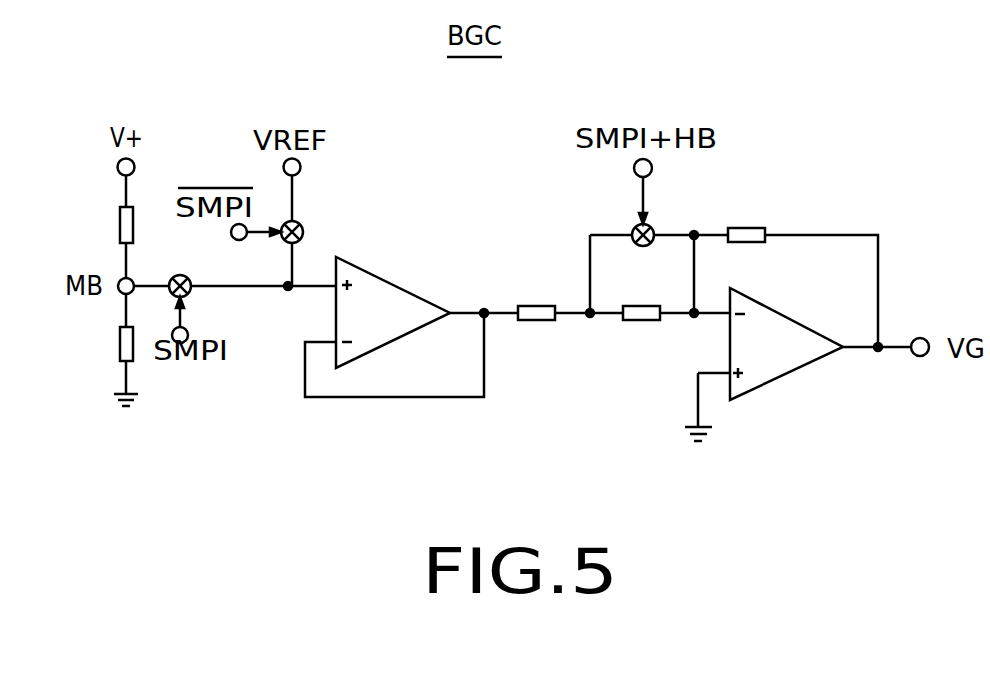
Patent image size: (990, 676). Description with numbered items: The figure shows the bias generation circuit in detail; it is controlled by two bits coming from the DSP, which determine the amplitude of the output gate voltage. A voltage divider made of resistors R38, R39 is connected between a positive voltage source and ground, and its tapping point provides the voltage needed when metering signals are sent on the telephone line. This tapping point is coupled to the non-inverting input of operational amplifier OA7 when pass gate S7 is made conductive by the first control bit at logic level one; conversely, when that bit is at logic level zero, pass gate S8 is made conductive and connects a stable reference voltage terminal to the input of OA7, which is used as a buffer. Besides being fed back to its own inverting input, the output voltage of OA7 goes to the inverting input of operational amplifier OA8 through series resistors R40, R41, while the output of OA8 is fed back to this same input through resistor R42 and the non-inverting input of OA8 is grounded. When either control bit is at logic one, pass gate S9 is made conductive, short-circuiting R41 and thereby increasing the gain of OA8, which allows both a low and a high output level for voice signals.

The resistor R38 is at (91, 225).
The resistor R39 is at (91, 346).
The series resistor R40 is at (537, 297).
The series resistor R41 is at (637, 298).
The feedback resistor R42 is at (744, 219).
The pass gate S7 is at (178, 292).
The pass gate S8 is at (288, 232).
The pass gate S9 is at (621, 202).
The operational amplifier OA7 is at (393, 312).
The operational amplifier OA8 is at (786, 344).